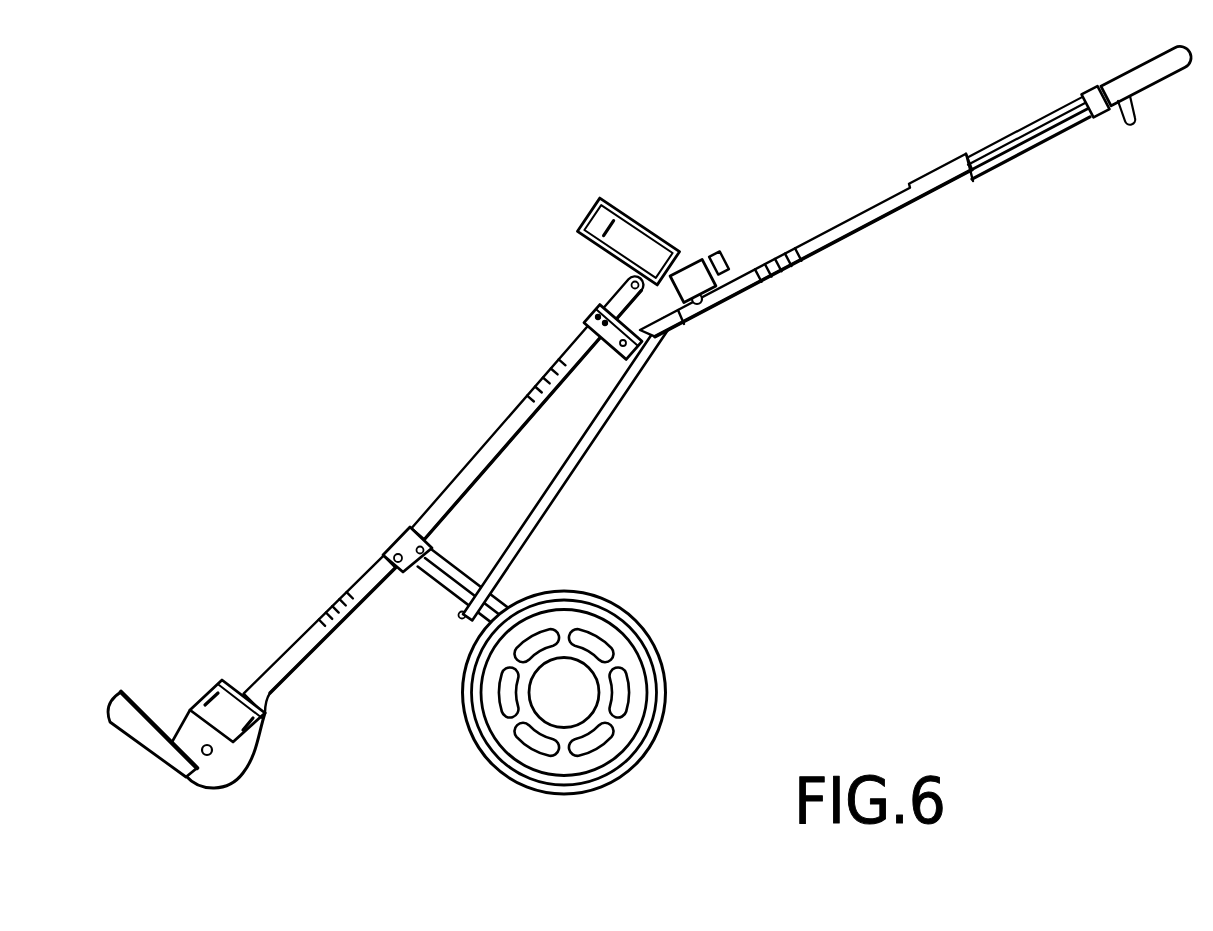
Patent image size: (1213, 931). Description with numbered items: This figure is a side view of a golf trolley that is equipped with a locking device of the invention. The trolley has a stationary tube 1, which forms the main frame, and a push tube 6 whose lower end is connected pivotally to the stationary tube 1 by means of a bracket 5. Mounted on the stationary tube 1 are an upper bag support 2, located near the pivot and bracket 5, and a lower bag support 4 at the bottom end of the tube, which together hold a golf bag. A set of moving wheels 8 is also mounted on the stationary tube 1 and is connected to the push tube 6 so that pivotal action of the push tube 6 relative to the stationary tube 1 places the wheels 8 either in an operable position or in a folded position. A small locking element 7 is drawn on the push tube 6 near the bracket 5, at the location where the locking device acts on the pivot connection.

The stationary tube 1 is at (480, 447).
The upper bag support 2 is at (590, 212).
The lower bag support 4 is at (187, 722).
The bracket 5 is at (592, 308).
The push tube 6 is at (866, 222).
The locking block 7 is at (702, 255).
The moving wheels 8 is at (649, 632).